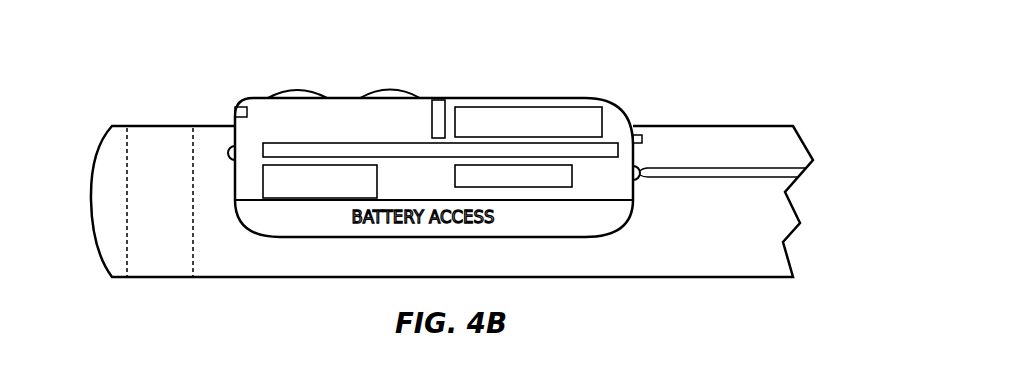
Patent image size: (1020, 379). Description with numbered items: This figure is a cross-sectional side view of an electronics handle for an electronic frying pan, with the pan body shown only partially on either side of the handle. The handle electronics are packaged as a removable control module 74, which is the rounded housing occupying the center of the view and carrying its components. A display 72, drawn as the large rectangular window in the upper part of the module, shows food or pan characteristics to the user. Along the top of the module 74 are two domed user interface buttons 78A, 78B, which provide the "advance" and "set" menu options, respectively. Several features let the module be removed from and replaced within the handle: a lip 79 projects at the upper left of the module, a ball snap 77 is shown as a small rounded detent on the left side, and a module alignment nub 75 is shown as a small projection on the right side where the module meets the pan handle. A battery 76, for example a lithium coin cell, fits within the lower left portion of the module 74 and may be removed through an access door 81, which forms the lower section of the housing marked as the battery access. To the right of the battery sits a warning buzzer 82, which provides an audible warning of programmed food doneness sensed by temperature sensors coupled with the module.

The display 72 is at (550, 117).
The control module 74 is at (510, 98).
The module alignment nub 75 is at (645, 138).
The battery 76 is at (290, 188).
The ball snap 77 is at (228, 153).
The user interface button 78A is at (387, 90).
The user interface button 78B is at (293, 92).
The lip 79 is at (234, 108).
The access door 81 is at (316, 220).
The warning buzzer 82 is at (543, 173).